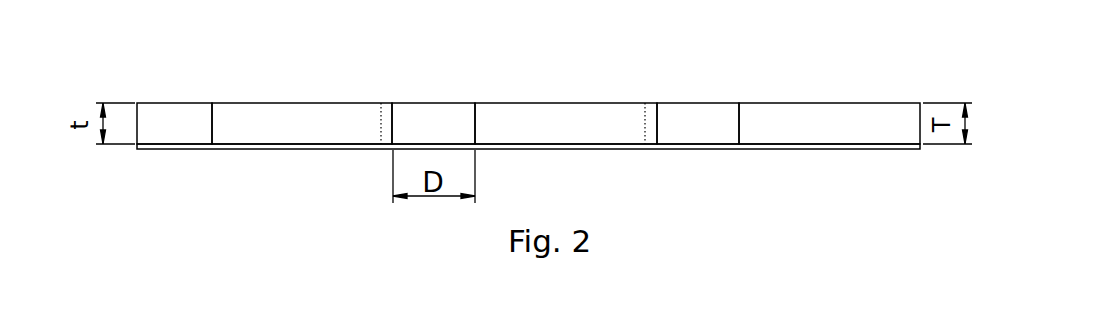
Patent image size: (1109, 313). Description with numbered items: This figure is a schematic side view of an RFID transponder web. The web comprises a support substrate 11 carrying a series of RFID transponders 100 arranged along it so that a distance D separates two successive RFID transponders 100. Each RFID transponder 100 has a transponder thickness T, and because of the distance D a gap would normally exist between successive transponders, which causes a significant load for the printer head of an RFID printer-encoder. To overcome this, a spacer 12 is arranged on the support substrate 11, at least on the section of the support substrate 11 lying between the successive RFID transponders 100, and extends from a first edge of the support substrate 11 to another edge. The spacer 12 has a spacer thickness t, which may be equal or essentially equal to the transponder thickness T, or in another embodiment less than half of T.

The support substrate 11 is at (283, 147).
The spacer 12 is at (172, 122).
The RFID transponder 100 is at (303, 122).